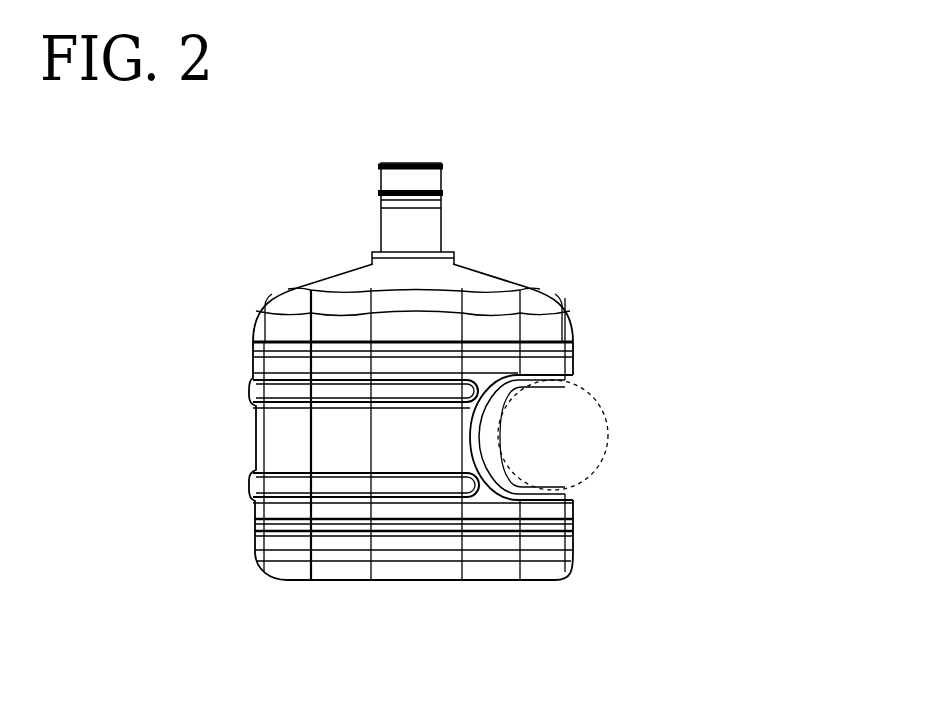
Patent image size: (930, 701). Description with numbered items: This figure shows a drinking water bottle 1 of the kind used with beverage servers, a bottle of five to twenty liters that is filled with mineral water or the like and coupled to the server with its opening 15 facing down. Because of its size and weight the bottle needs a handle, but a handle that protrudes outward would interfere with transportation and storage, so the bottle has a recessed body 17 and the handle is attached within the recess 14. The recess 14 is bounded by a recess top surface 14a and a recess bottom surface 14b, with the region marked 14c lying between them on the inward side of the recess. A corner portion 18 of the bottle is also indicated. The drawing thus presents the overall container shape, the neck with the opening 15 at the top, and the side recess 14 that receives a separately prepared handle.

The drinking water bottle 1 is at (275, 222).
The recess 14 is at (590, 393).
The recess top surface 14a is at (543, 383).
The recess bottom surface 14b is at (543, 492).
The grip portion of handle 14c is at (503, 437).
The opening 15 is at (410, 163).
The recessed body 17 is at (240, 435).
The corner portion 18 is at (470, 443).